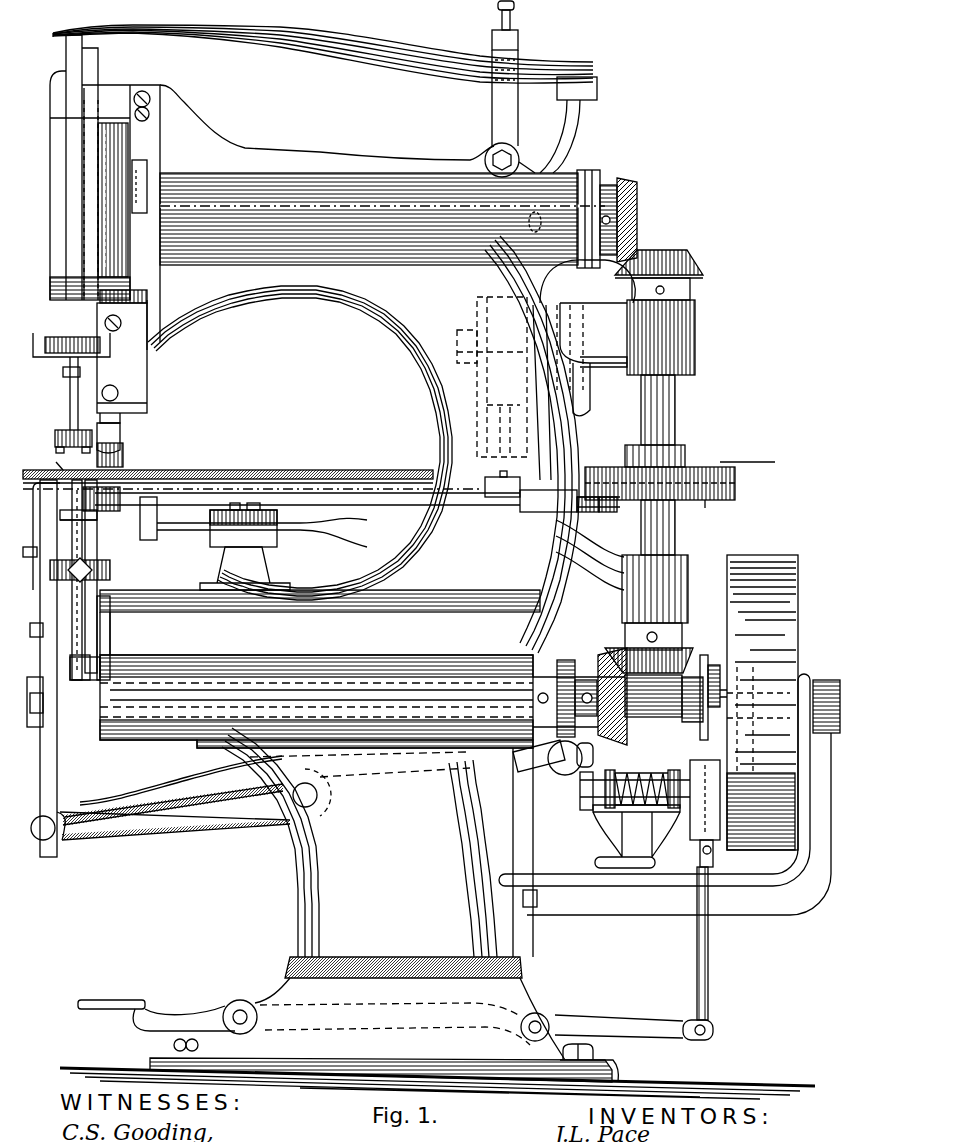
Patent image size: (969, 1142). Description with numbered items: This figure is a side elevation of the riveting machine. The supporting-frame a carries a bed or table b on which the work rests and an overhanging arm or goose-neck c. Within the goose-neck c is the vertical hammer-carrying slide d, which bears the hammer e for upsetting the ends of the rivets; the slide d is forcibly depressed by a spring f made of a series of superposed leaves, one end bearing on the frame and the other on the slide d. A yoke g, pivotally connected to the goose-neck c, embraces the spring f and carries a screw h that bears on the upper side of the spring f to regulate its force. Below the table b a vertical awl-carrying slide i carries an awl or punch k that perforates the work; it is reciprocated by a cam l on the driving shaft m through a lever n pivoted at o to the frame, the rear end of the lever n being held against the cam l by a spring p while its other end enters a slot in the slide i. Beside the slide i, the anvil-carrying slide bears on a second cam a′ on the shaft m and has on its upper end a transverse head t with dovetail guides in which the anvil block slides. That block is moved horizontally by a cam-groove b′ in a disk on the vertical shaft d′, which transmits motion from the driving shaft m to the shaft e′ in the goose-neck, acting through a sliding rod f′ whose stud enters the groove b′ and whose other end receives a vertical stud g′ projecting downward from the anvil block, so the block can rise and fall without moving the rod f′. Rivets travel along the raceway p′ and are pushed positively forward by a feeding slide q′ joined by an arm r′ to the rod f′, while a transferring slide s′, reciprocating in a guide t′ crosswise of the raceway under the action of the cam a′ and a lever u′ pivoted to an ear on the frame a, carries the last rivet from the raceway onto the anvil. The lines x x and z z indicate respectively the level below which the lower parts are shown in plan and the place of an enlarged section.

The spring f is at (345, 48).
The screw h is at (514, 18).
The yoke g is at (492, 115).
The hammer-carrying slide d is at (65, 57).
The overhanging arm or goose-neck c is at (342, 362).
The cam a′ is at (160, 258).
The hammer e is at (533, 222).
The vertical shaft d′ is at (660, 437).
The line x x is at (403, 520).
The shaft e′ is at (735, 484).
The cam-groove b′ is at (720, 500).
The raceway p′ is at (485, 485).
The bed or table b is at (255, 470).
The feeding-slide q′ is at (583, 512).
The arm r′ is at (610, 512).
The line z z is at (72, 437).
The rivet-transferring slide s′ is at (58, 466).
The awl-carrying slide i is at (50, 773).
The lever u′ is at (100, 612).
The awl or punch k is at (66, 561).
The transverse head t is at (108, 512).
The guide t′ is at (86, 536).
The vertical stud g′ is at (157, 520).
The sliding rod f′ is at (333, 538).
The supporting-frame a is at (301, 680).
The cam l is at (565, 660).
The driving shaft m is at (632, 722).
The pivot o is at (315, 808).
The spring p is at (192, 778).
The lever n is at (200, 818).